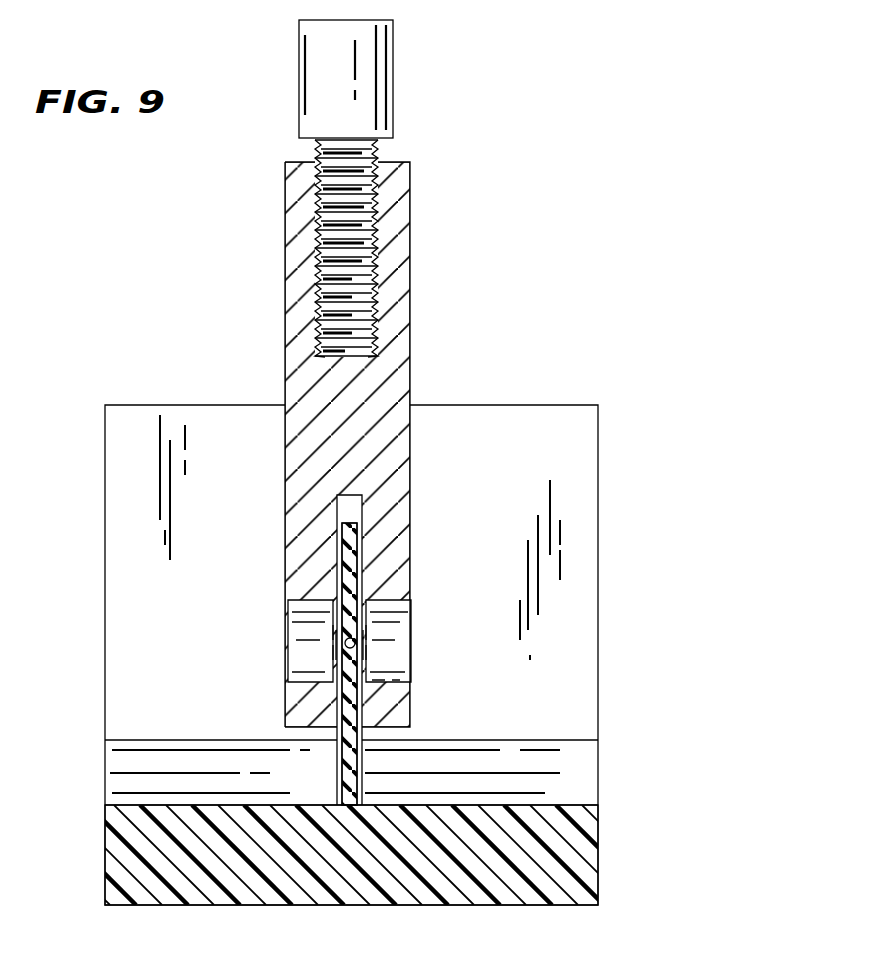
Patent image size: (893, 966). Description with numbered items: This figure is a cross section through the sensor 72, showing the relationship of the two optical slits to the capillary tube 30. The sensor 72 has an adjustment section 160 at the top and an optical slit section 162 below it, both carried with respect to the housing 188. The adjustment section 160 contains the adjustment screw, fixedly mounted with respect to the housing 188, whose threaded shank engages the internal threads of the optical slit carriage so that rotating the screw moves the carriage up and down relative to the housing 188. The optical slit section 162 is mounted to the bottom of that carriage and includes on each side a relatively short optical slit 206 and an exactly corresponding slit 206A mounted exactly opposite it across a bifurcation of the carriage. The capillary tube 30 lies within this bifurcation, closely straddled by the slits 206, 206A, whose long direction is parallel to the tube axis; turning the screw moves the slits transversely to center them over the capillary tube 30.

The sensor 72 is at (211, 257).
The adjustment section 160 is at (451, 8).
The optical slit section 162 is at (452, 542).
The capillary tube 30 is at (357, 622).
The optical slit 206 is at (333, 645).
The optical slit 206A is at (366, 645).
The housing 188 is at (105, 845).